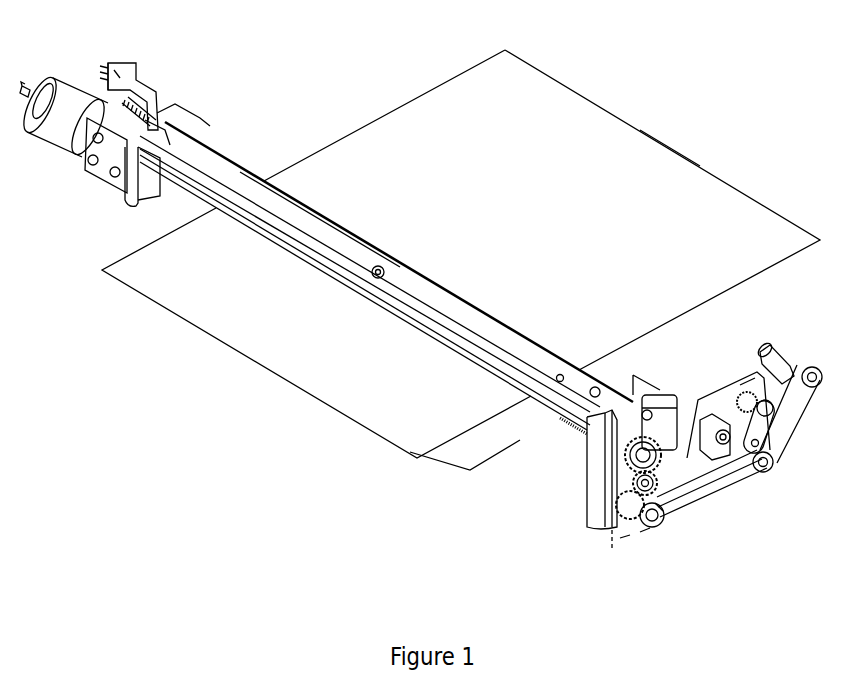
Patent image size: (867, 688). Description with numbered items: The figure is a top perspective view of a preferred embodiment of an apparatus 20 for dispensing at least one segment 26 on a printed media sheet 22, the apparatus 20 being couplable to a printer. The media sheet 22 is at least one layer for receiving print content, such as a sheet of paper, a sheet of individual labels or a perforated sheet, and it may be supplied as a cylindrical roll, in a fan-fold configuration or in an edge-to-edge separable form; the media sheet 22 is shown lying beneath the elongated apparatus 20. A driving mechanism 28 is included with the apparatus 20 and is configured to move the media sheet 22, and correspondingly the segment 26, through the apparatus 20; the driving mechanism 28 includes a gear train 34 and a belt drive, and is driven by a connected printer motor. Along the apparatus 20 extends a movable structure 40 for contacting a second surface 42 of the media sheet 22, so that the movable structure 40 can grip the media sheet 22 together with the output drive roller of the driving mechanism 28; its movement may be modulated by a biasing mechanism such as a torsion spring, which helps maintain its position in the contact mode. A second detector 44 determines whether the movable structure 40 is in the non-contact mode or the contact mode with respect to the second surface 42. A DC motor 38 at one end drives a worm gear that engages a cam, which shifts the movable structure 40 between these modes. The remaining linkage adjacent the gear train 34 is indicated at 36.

The apparatus 20 is at (235, 137).
The media sheet 22 is at (578, 132).
The segment 26 is at (533, 400).
The driving mechanism 28 is at (705, 507).
The gear train 34 is at (608, 525).
The actuator arm 36 is at (793, 423).
The DC motor 38 is at (78, 95).
The movable structure 40 is at (253, 187).
The second surface 42 is at (672, 173).
The second detector 44 is at (123, 63).